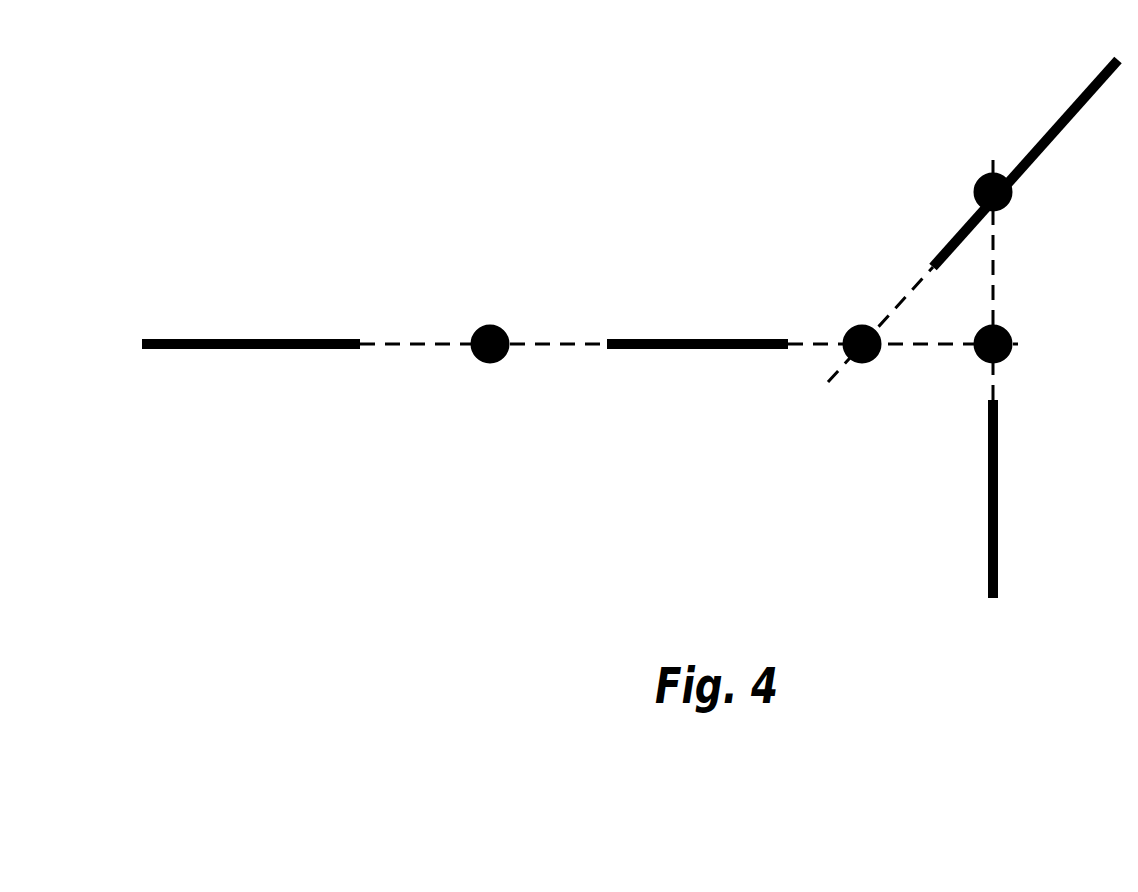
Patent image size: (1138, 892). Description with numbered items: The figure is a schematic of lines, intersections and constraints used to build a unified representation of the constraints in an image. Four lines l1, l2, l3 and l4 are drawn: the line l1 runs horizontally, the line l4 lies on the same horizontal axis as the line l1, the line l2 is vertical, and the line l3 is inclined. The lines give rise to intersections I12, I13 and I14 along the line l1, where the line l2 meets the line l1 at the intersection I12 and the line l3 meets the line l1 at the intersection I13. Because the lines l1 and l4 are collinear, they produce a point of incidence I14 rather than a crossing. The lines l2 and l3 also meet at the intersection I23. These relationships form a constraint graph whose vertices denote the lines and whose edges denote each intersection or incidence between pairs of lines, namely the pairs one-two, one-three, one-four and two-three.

The line l1 is at (697, 297).
The line l2 is at (1027, 499).
The line l3 is at (1025, 147).
The line l4 is at (251, 277).
The intersection I12 is at (1041, 384).
The intersection I13 is at (844, 295).
The point of incidence I14 is at (494, 300).
The intersection I23 is at (1043, 222).